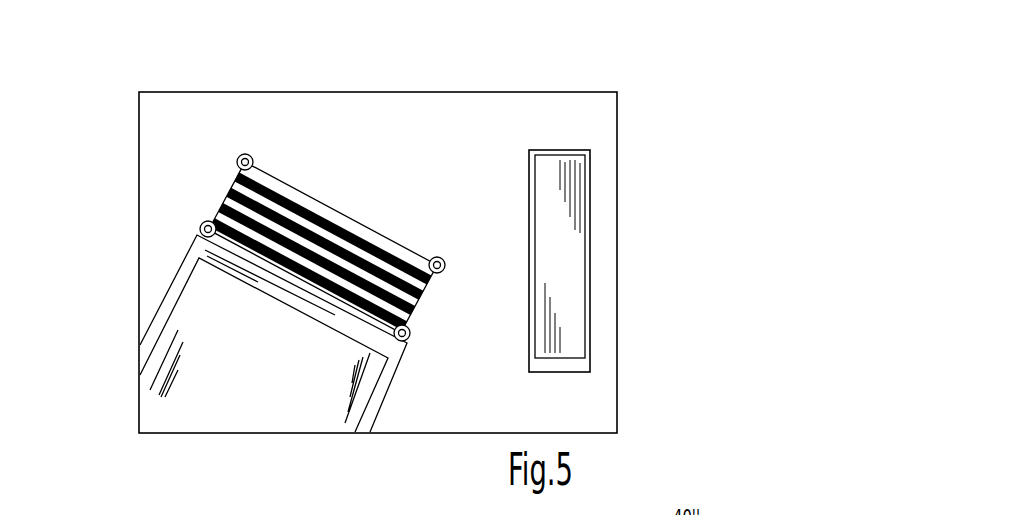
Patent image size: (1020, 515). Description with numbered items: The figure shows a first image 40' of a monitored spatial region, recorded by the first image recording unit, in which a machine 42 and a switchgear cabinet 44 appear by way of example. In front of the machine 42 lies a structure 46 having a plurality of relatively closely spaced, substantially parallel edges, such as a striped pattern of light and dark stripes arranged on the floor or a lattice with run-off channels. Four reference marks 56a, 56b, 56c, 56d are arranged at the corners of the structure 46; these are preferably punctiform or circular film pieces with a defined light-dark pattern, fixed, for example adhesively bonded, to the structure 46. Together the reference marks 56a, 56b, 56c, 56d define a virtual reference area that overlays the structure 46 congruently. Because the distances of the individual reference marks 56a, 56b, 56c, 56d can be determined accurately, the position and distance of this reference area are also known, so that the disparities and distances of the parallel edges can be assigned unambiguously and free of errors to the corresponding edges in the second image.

The first image 40' is at (602, 41).
The machine 42 is at (270, 406).
The switchgear cabinet 44 is at (570, 255).
The structure 46 is at (383, 220).
The reference mark 56a is at (245, 153).
The reference mark 56b is at (441, 258).
The reference mark 56c is at (410, 331).
The reference mark 56d is at (201, 224).